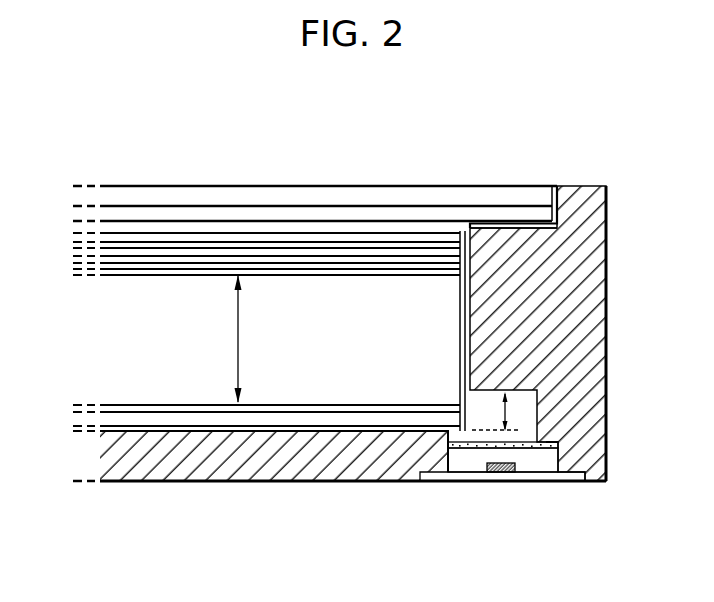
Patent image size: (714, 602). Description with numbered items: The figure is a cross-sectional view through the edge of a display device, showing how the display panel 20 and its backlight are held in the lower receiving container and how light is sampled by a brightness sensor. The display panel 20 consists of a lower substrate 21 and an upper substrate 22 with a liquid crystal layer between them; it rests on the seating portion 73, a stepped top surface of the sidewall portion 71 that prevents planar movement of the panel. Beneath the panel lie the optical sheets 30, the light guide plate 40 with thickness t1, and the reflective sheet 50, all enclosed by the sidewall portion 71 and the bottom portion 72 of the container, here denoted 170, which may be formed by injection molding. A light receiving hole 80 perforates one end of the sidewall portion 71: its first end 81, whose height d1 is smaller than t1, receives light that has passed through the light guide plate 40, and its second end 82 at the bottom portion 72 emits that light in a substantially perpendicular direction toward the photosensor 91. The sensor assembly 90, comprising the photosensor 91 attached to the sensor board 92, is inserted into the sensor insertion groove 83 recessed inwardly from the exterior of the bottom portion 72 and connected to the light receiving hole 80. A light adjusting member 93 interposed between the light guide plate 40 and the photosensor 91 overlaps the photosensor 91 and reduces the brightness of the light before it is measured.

The display panel 20 is at (258, 133).
The lower substrate 21 is at (250, 213).
The upper substrate 22 is at (215, 197).
The optical sheets 30 is at (68, 232).
The light guide plate 40 is at (315, 290).
The reflective sheet 50 is at (204, 408).
The housing 170 is at (428, 130).
The sidewall portion 71 is at (497, 280).
The bottom portion 72 is at (345, 445).
The seating portion 73 is at (507, 223).
The light receiving hole 80 is at (453, 542).
The first end 81 is at (486, 412).
The second end 82 is at (488, 438).
The sensor insertion groove 83 is at (549, 462).
The sensor assembly 90 is at (525, 542).
The photosensor 91 is at (502, 470).
The sensor board 92 is at (524, 475).
The light adjusting member 93 is at (548, 444).